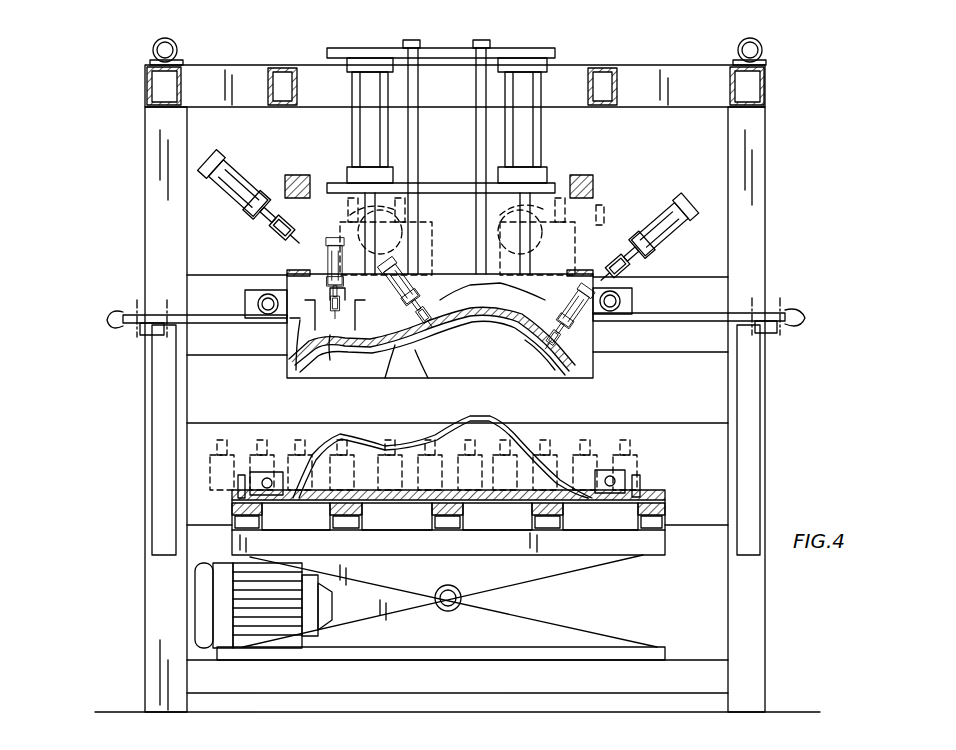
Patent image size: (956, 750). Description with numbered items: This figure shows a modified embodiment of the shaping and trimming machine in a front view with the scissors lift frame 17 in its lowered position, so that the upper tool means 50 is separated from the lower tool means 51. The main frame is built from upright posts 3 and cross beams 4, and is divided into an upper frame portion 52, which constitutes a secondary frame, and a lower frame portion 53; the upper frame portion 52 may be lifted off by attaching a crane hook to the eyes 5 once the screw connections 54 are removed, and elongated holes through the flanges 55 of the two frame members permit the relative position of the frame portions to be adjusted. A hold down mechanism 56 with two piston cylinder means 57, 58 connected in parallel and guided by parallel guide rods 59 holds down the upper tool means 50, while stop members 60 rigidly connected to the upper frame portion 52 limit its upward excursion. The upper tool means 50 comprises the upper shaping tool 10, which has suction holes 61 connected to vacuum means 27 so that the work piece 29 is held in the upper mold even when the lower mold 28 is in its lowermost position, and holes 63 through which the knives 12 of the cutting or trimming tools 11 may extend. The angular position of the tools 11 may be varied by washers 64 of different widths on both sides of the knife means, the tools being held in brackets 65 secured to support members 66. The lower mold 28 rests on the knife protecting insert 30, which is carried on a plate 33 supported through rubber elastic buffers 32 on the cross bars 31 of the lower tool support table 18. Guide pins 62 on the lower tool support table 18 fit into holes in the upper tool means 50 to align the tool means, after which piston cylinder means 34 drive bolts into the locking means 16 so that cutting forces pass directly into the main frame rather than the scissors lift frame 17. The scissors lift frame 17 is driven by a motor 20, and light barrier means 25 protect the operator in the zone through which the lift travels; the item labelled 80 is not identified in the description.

The upright posts 3 is at (145, 228).
The cross beams 4 is at (275, 65).
The eyes 5 is at (172, 42).
The upper shaping tool 10 is at (490, 308).
The cutting or trimming tools 11 is at (245, 162).
The knife 12 is at (300, 240).
The locking means 16 is at (248, 290).
The scissors lift frame 17 is at (506, 592).
The lower tool support table 18 is at (667, 540).
The motor 20 is at (200, 603).
The light barrier means 25 is at (152, 402).
The vacuum means 27 is at (225, 440).
The lower mold 28 is at (538, 445).
The work piece 29 is at (536, 348).
The insert 30 is at (382, 505).
The cross bars 31 is at (440, 528).
The rubber elastic buffers 32 is at (470, 512).
The plate 33 is at (278, 505).
The piston cylinder means 34 is at (268, 472).
The upper tool means 50 is at (590, 228).
The lower tool means 51 is at (628, 463).
The upper frame portion 52 is at (803, 138).
The lower frame portion 53 is at (778, 470).
The screw connections 54 is at (165, 312).
The flanges 55 is at (110, 322).
The hold down mechanism 56 is at (518, 44).
The piston cylinder means 57 is at (352, 136).
The piston cylinder means 58 is at (541, 136).
The parallel guide rods 59 is at (420, 142).
The stop members 60 is at (300, 175).
The suction holes 61 is at (300, 358).
The guide pins 62 is at (238, 495).
The holes 63 is at (455, 332).
The washers 64 is at (550, 272).
The brackets 65 is at (452, 268).
The support members 66 is at (300, 270).
The support ledge 80 is at (290, 318).